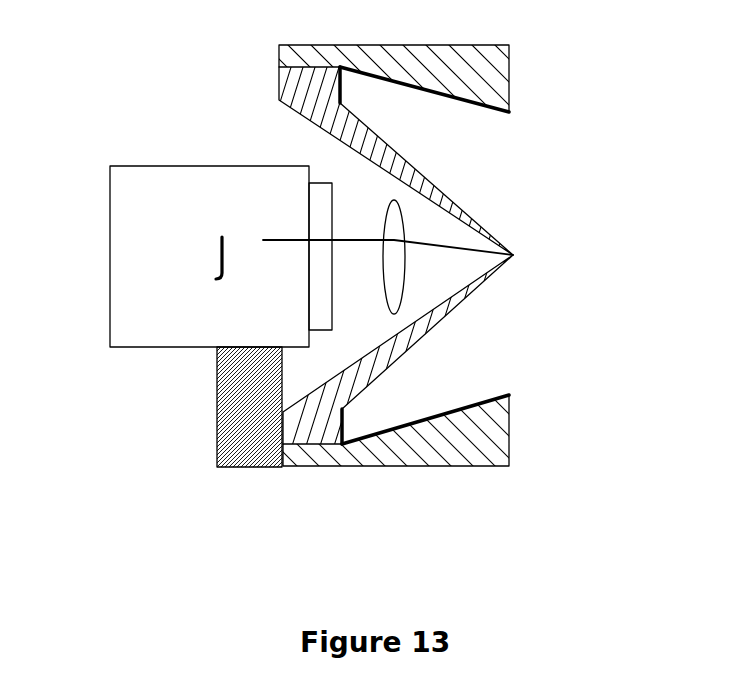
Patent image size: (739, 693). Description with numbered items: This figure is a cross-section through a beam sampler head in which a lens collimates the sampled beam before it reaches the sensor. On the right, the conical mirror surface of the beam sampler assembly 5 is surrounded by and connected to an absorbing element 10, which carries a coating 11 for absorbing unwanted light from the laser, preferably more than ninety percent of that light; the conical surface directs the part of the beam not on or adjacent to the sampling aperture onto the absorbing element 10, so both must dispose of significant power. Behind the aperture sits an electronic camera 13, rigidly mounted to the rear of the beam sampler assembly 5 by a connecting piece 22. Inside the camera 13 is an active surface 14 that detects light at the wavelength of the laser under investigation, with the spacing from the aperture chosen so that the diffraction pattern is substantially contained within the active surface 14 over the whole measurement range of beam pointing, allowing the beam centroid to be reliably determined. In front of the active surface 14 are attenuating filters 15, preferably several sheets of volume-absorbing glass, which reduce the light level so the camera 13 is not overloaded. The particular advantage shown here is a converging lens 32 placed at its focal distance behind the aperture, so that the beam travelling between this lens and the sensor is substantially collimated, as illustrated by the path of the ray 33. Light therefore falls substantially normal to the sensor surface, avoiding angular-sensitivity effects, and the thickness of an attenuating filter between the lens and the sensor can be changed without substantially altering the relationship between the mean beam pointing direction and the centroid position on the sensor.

The beam sampler assembly 5 is at (320, 412).
The absorbing element 10 is at (495, 83).
The coating 11 is at (418, 89).
The electronic camera 13 is at (208, 165).
The active surface 14 is at (218, 278).
The attenuating filters 15 is at (317, 225).
The connecting piece 22 is at (230, 405).
The converging lens 32 is at (407, 280).
The ray 33 is at (375, 244).